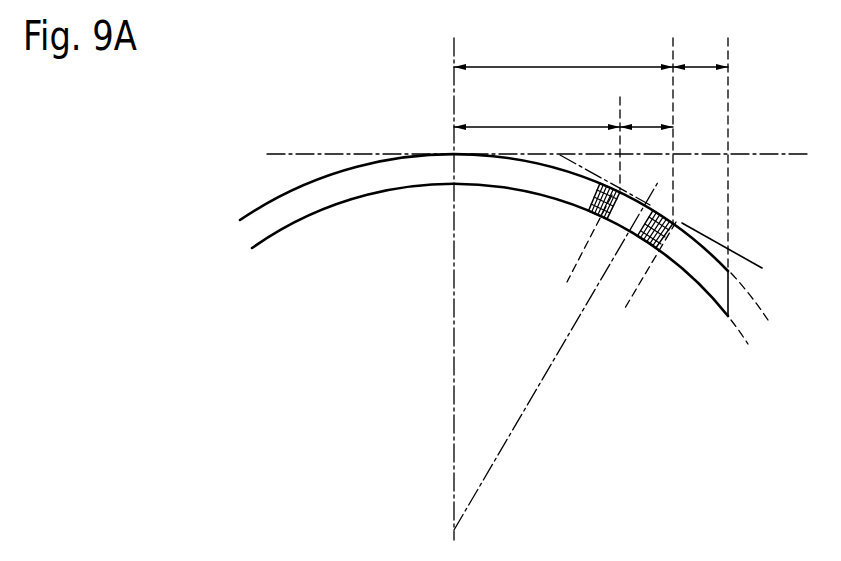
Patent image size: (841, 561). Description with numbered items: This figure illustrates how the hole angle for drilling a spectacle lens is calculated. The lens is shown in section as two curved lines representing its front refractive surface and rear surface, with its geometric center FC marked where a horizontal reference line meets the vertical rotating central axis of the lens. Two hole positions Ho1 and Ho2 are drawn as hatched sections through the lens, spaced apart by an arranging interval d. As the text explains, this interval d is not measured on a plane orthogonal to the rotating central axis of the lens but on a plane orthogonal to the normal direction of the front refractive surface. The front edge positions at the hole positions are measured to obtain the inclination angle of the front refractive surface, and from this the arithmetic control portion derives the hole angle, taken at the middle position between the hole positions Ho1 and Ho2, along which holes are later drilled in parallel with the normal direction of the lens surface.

The geometric center of the target lens shape FC is at (454, 154).
The hole position Ho1 is at (658, 246).
The hole position Ho2 is at (600, 198).
The arranging interval of two holes d is at (634, 289).